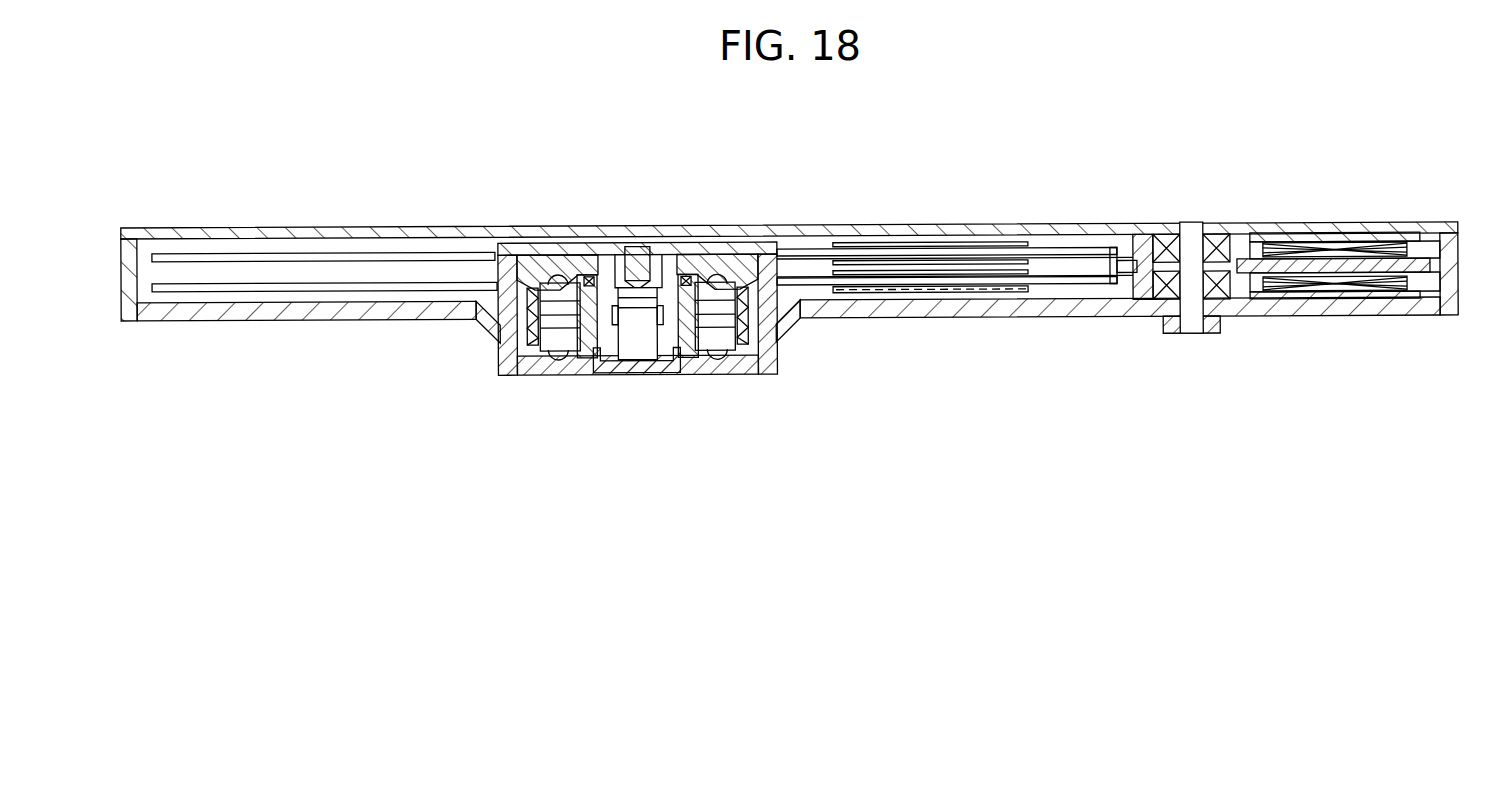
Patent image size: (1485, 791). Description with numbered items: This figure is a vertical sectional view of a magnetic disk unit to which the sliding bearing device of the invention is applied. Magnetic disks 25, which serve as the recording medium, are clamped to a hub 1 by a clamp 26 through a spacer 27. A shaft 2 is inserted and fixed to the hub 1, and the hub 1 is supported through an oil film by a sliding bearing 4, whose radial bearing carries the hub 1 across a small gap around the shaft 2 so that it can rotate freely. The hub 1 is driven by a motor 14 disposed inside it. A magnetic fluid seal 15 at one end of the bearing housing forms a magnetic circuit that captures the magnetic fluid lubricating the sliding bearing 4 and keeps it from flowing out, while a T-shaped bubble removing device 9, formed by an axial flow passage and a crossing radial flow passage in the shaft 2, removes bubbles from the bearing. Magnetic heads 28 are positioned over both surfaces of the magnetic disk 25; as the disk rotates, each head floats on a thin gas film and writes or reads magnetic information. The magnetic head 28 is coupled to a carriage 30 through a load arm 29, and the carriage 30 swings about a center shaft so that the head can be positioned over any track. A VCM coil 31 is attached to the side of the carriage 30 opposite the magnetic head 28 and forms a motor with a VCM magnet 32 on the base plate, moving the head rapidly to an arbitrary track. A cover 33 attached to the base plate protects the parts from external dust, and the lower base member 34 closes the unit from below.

The hub 1 is at (743, 240).
The shaft 2 is at (640, 243).
The sliding bearing 4 is at (592, 348).
The bubble removing device 9 is at (638, 356).
The motor 14 is at (725, 346).
The magnetic fluid seal 15 is at (695, 261).
The magnetic disks 25 is at (290, 254).
The clamp 26 is at (519, 259).
The spacer 27 is at (489, 260).
The magnetic heads 28 is at (876, 247).
The load arm 29 is at (983, 247).
The carriage 30 is at (1140, 328).
The VCM coil 31 is at (1248, 240).
The VCM magnet 32 is at (1320, 306).
The cover 33 is at (1173, 236).
The base plate 34 is at (938, 322).